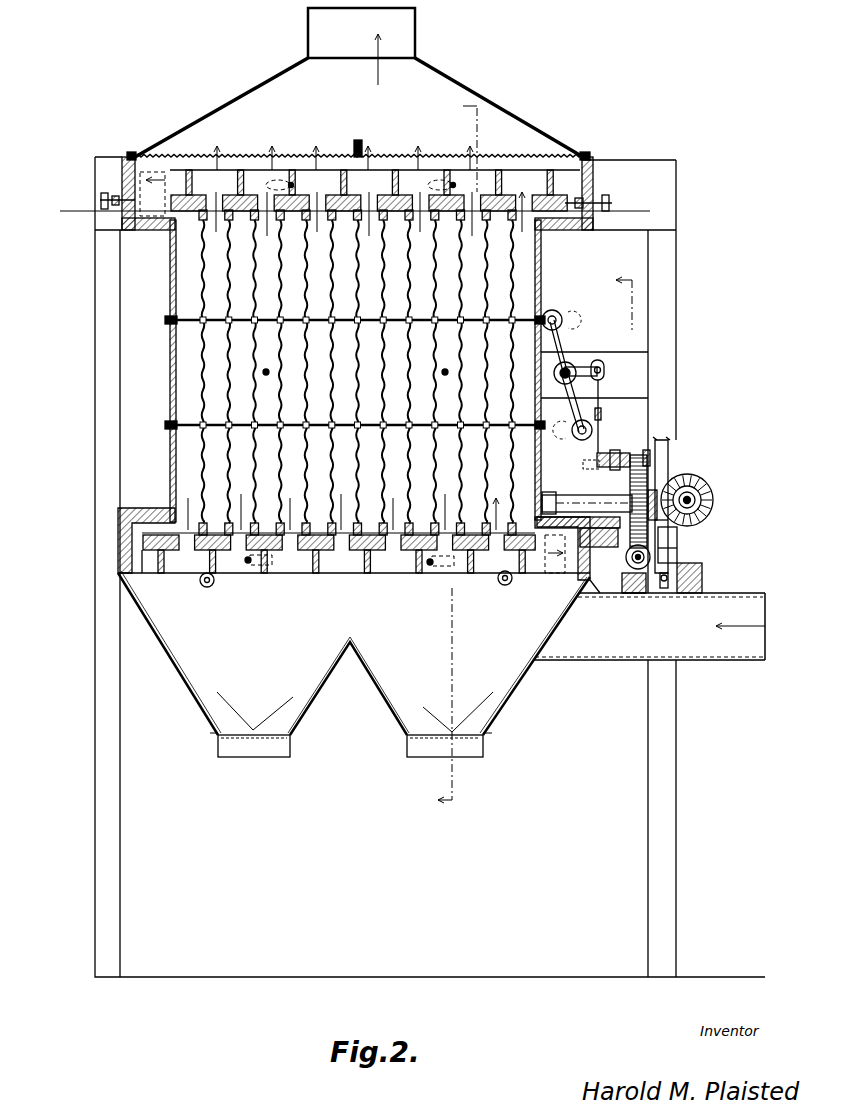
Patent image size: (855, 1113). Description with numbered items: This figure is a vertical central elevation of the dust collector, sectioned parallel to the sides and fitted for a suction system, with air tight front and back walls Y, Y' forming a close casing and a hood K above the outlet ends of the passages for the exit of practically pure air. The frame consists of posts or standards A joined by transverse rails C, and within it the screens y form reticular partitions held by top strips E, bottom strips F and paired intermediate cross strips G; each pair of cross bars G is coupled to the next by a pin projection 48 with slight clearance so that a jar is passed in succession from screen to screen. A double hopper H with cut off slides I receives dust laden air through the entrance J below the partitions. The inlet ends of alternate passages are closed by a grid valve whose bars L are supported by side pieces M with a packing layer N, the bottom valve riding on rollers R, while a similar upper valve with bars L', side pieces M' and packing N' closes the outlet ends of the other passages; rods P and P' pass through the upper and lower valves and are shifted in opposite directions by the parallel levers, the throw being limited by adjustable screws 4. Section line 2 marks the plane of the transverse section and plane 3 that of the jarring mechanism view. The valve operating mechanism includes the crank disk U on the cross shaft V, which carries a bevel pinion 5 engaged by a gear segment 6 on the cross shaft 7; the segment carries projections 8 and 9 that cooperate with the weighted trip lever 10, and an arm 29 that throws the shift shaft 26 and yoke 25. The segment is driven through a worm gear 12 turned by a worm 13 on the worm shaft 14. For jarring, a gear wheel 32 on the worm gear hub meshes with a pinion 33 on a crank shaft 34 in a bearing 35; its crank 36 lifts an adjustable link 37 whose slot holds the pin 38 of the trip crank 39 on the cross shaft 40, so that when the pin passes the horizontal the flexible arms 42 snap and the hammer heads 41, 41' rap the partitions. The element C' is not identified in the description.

The posts or standards A is at (98, 755).
The hood K is at (233, 97).
The perforated top plate X is at (400, 155).
The section line 2- 2 is at (459, 451).
The transverse rails C is at (337, 362).
The adjustable screws 4 is at (100, 201).
The side pieces of outlet grid valve M' is at (375, 157).
The outlet bars L' is at (369, 194).
The rod P is at (368, 187).
The top strips E is at (235, 221).
The packing layer of outlet valve N' is at (369, 214).
The air tight front wall Y is at (156, 371).
The air tight back wall Y' is at (549, 370).
The screens y is at (358, 371).
The pin projection 48 is at (355, 362).
The intermediate cross strips G is at (357, 361).
The bottom strips F is at (338, 519).
The packing layer N is at (342, 512).
The bars L is at (339, 569).
The side pieces M is at (354, 581).
The rollers R is at (207, 587).
The rod P' is at (338, 584).
The lower right frame bracket C' is at (563, 560).
The hopper H is at (354, 653).
The cut off slide I is at (215, 738).
The entrance J is at (650, 626).
The cross shaft 7 is at (543, 500).
The sectional plane 3- 3 is at (616, 560).
The hammer head 41 is at (561, 310).
The hammer head 41' is at (570, 436).
The arms 42 is at (567, 376).
The cross shaft 40 is at (558, 380).
The trip crank 39 is at (581, 364).
The pin 38 is at (600, 362).
The link 37 is at (600, 416).
The crank 36 is at (584, 467).
The bearing 35 is at (605, 452).
The crank shaft 34 is at (615, 450).
The pinion 33 is at (646, 450).
The worm gear 12 is at (638, 455).
The gear wheel 32 is at (630, 489).
The gear segment 6 is at (668, 443).
The projection 8 is at (657, 486).
The crank disk U is at (700, 482).
The bevel pinion 5 is at (705, 497).
The cross shaft V is at (695, 503).
The trip lever 10 is at (662, 507).
The projection 9 is at (668, 532).
The arm 29 is at (665, 551).
The worm 13 is at (597, 586).
The worm shaft 14 is at (632, 594).
The yoke 25 is at (661, 588).
The shift shaft 26 is at (665, 588).